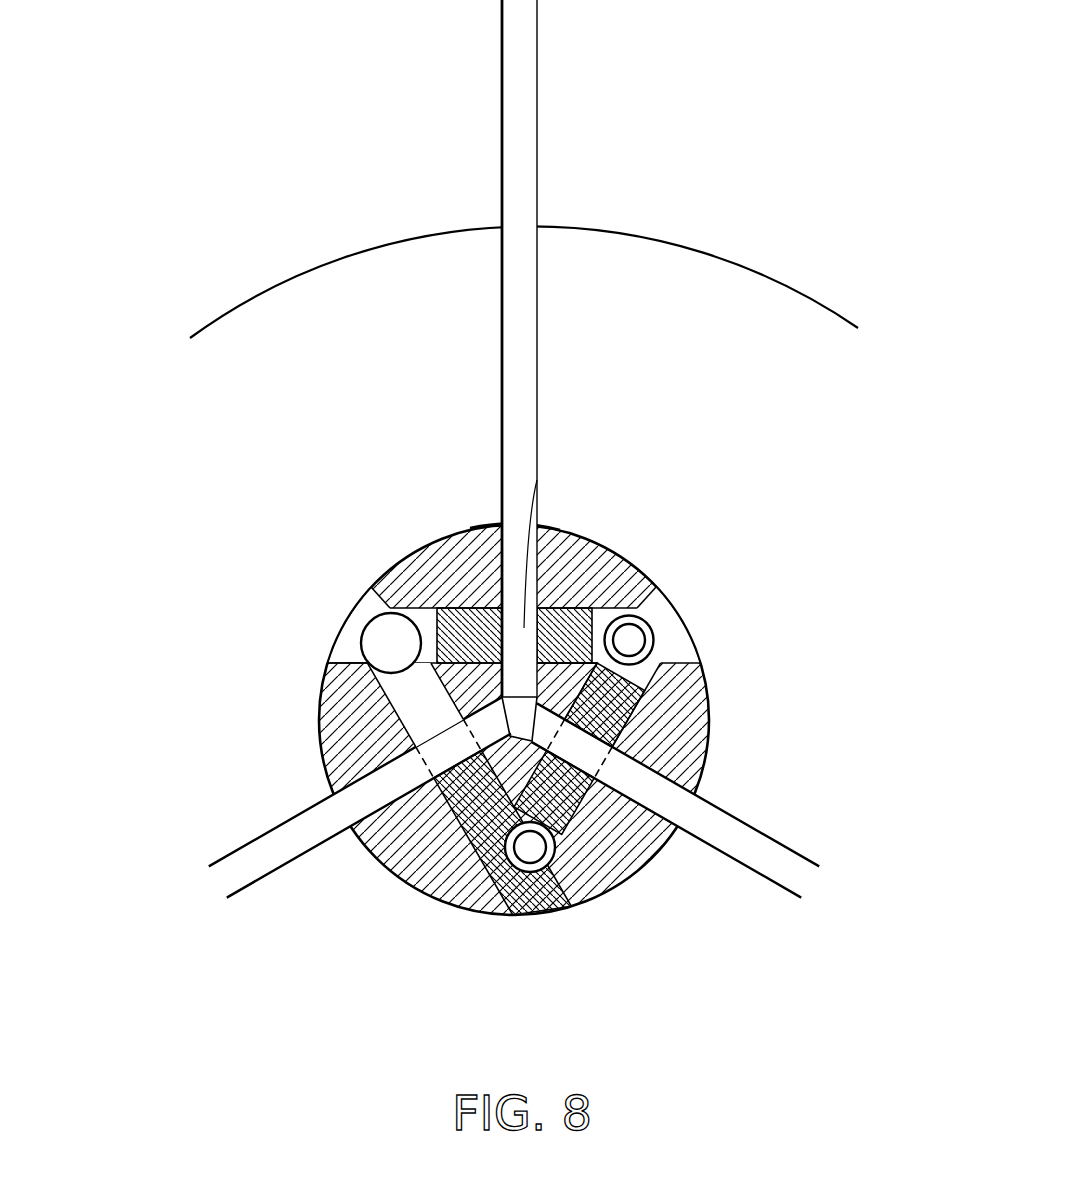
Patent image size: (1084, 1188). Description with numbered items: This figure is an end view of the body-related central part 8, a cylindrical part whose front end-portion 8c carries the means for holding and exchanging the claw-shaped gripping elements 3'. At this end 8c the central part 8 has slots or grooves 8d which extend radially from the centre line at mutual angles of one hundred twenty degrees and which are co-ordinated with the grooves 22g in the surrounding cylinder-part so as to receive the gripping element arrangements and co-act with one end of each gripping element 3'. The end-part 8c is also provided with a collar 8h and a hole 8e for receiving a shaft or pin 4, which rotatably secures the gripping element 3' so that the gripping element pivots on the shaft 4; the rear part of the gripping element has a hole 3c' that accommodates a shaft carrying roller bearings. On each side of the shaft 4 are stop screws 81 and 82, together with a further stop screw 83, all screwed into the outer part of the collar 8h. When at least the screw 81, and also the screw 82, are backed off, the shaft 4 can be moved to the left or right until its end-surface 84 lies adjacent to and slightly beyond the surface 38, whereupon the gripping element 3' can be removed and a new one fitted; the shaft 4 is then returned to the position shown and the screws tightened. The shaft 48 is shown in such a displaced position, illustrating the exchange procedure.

The grooves 22g is at (502, 278).
The surface 38 is at (502, 358).
The gripping element 3' is at (570, 348).
The hole 3c' is at (568, 522).
The slots or grooves 8d is at (488, 536).
The hole 8e is at (427, 606).
The shaft or pin 4 is at (562, 607).
The end-surface 84 is at (613, 606).
The stop screw 82 is at (637, 630).
The stop screw 81 is at (380, 636).
The end or front end-portion 8c is at (304, 658).
The body-related central part 8 is at (700, 720).
The collar 8h is at (330, 774).
The shaft 48 is at (458, 848).
The stop screw 83 is at (535, 872).